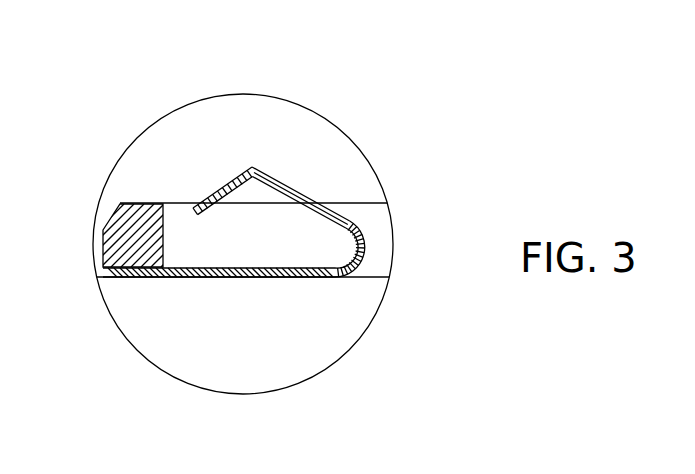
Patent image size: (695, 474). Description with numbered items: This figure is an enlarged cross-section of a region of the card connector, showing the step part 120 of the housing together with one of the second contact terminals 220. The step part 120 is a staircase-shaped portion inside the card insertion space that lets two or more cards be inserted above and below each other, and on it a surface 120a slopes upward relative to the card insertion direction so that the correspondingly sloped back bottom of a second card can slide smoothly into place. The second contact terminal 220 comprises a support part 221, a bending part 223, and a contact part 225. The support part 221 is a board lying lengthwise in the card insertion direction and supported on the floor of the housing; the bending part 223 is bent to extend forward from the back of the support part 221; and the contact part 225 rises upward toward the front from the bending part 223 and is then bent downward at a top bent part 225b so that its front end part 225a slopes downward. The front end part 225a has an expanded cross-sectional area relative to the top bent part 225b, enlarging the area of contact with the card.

The step part 120 is at (134, 178).
The surface sloping upward 120a is at (117, 214).
The 2nd contact terminal 220 is at (282, 238).
The support part 221 is at (238, 270).
The bending part 223 is at (360, 252).
The contact part 225 is at (242, 129).
The front end part 225a is at (196, 207).
The top bent part 225b is at (253, 167).